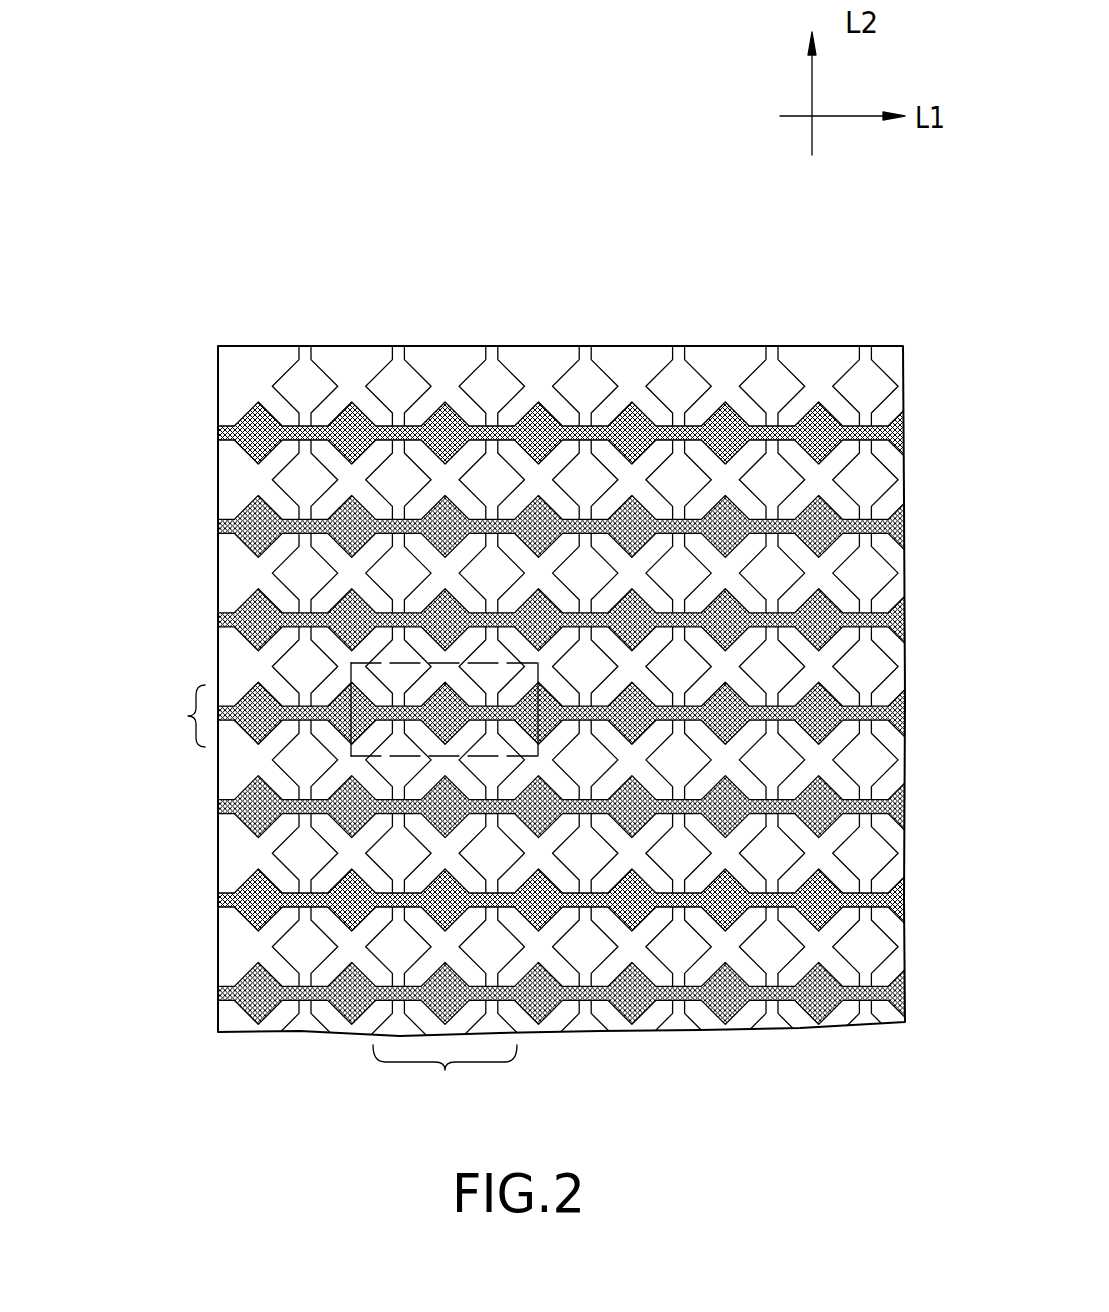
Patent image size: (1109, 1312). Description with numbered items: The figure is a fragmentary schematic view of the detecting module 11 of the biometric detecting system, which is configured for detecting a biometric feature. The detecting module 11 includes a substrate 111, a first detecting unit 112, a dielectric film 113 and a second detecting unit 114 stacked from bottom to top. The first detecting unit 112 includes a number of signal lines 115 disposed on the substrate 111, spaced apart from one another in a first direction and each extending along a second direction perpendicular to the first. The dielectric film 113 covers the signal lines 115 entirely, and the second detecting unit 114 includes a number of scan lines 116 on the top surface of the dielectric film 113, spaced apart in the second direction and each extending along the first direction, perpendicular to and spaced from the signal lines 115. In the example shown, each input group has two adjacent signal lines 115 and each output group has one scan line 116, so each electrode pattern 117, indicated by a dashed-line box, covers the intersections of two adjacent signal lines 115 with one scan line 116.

The detecting module 11 is at (499, 652).
The substrate 111 is at (333, 347).
The first detecting unit 112 is at (585, 634).
The dielectric film 113 is at (423, 360).
The second detecting unit 114 is at (499, 526).
The signal lines 115 is at (685, 268).
The scan lines 116 is at (216, 433).
The electrode pattern 117 is at (392, 757).